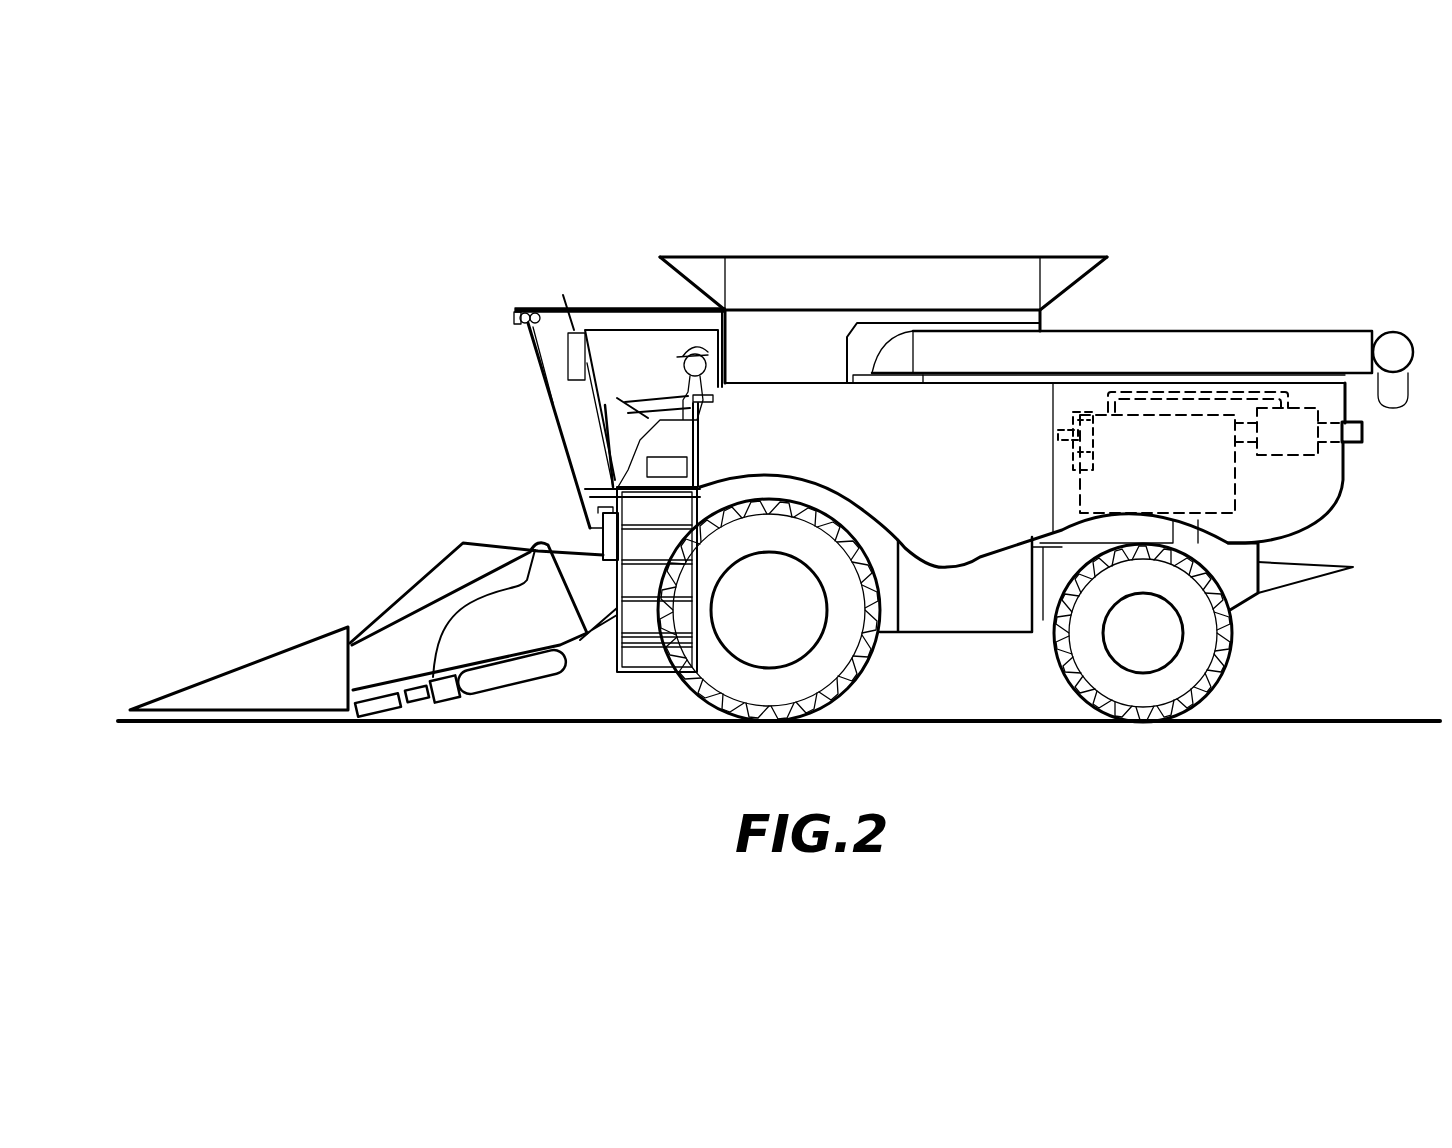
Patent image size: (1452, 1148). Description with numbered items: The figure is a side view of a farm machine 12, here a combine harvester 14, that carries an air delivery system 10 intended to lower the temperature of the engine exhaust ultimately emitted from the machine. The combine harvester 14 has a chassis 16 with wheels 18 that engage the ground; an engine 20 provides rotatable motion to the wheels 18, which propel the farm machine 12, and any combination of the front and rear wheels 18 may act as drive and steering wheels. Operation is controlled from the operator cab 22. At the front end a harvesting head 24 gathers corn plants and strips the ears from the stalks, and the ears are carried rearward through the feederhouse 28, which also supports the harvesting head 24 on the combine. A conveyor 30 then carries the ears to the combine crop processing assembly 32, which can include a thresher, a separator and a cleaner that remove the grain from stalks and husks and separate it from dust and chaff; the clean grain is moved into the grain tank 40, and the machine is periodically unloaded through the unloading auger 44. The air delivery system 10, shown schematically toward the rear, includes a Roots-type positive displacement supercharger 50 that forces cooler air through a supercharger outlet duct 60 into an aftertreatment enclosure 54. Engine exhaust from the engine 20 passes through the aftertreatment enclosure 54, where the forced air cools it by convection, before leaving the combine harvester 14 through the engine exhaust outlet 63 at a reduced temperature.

The air delivery system 10 is at (1262, 474).
The farm machine 12 is at (1097, 158).
The combine harvester 14 is at (985, 246).
The chassis 16 is at (950, 617).
The wheels 18 is at (857, 667).
The engine 20 is at (1170, 470).
The operator cab 22 is at (650, 355).
The harvesting head 24 is at (273, 668).
The feederhouse 28 is at (457, 597).
The conveyor 30 is at (595, 597).
The combine crop processing assembly 32 is at (943, 497).
The grain tank 40 is at (806, 339).
The unloading auger 44 is at (1163, 352).
The supercharger 50 is at (1092, 405).
The aftertreatment enclosure 54 is at (1302, 446).
The supercharger outlet duct 60 is at (1240, 392).
The engine exhaust outlet 63 is at (1352, 440).